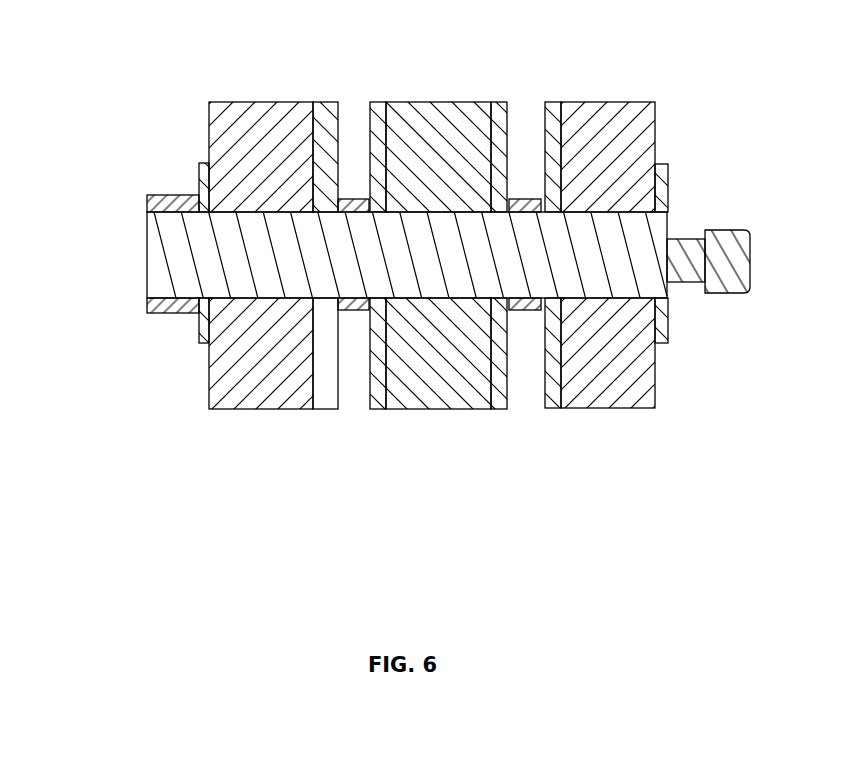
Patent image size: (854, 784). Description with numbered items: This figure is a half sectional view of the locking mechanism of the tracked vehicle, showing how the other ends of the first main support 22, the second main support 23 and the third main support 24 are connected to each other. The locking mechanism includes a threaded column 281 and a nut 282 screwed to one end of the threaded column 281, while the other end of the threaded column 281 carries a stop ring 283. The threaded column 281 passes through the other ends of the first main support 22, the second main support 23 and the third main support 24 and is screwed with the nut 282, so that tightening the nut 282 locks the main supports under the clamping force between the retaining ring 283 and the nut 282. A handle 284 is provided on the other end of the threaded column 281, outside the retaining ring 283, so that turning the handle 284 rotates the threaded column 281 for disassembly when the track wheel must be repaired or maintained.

The first main support 22 is at (438, 409).
The second main support 23 is at (258, 409).
The third main support 24 is at (352, 199).
The threaded column 281 is at (157, 232).
The nut 282 is at (172, 318).
The stop ring 283 is at (668, 176).
The handle 284 is at (722, 293).